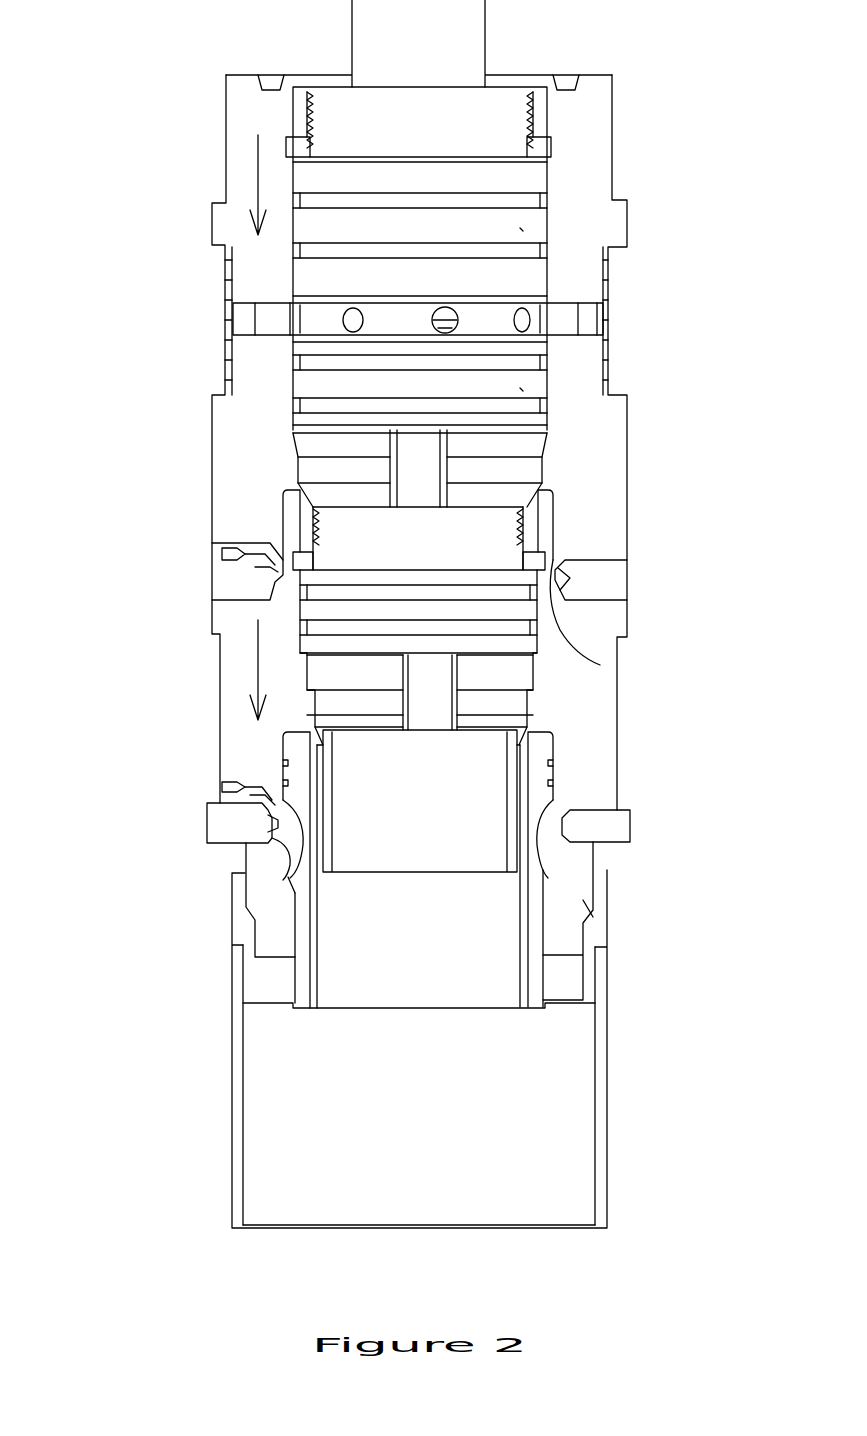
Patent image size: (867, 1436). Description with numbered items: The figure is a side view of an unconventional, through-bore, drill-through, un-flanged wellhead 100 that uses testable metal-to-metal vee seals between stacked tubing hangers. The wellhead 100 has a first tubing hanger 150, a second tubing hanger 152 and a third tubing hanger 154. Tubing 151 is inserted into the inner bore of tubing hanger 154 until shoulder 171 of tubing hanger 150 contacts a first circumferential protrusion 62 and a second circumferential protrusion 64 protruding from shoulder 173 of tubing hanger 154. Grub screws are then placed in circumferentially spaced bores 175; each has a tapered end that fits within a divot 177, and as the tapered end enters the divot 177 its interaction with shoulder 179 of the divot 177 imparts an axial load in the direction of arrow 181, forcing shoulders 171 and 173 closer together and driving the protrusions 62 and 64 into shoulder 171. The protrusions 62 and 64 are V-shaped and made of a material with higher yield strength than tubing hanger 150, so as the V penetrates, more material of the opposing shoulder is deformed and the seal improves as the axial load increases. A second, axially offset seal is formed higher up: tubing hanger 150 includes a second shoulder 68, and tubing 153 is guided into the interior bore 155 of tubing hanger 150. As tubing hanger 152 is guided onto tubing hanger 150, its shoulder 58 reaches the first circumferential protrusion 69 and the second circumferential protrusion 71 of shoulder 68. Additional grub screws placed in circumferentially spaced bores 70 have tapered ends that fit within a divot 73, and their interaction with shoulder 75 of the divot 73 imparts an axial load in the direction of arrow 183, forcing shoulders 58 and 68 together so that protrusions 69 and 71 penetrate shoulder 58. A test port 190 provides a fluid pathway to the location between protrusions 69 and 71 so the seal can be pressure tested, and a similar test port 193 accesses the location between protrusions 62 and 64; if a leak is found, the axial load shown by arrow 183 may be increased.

The un-flanged wellhead 100 is at (237, 1088).
The first tubing hanger 150 is at (585, 773).
The tubing 151 is at (330, 750).
The second tubing hanger 152 is at (577, 233).
The tubing 153 is at (393, 447).
The third tubing hanger 154 is at (537, 882).
The interior bore 155 is at (432, 678).
The shoulder 171 is at (577, 797).
The shoulder 173 is at (575, 797).
The circumferentially spaced bores 175 is at (222, 823).
The divot 177 is at (273, 825).
The shoulder of divot 179 is at (270, 813).
The arrow 181 is at (258, 672).
The arrow 183 is at (258, 175).
The test port 190 is at (273, 560).
The test port 193 is at (253, 783).
The shoulder 58 is at (558, 567).
The first circumferential protrusion 62 is at (280, 810).
The second circumferential protrusion 64 is at (290, 837).
The second shoulder 68 is at (550, 590).
The first circumferential protrusion 69 is at (278, 558).
The circumferentially spaced bores 70 is at (607, 585).
The second circumferential protrusion 71 is at (275, 567).
The divot 73 is at (565, 578).
The shoulder of divot 75 is at (275, 575).